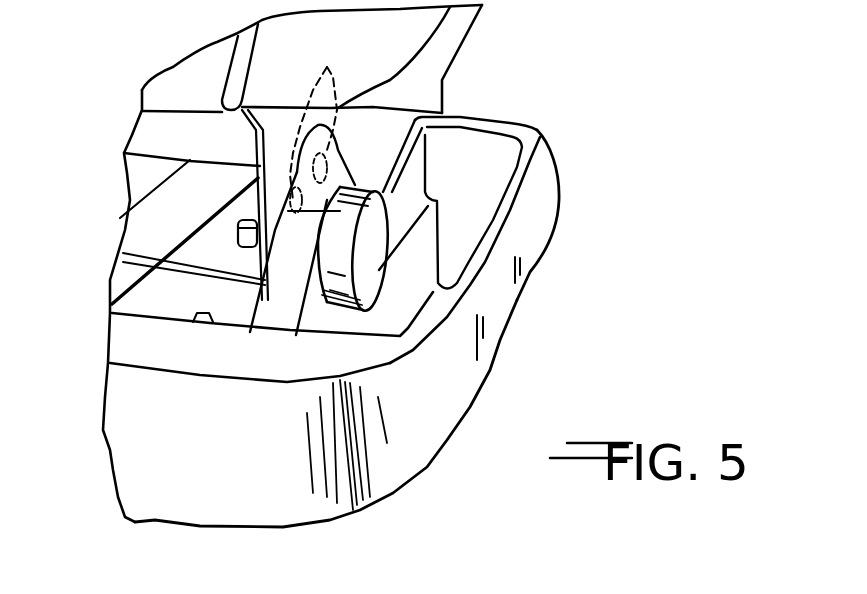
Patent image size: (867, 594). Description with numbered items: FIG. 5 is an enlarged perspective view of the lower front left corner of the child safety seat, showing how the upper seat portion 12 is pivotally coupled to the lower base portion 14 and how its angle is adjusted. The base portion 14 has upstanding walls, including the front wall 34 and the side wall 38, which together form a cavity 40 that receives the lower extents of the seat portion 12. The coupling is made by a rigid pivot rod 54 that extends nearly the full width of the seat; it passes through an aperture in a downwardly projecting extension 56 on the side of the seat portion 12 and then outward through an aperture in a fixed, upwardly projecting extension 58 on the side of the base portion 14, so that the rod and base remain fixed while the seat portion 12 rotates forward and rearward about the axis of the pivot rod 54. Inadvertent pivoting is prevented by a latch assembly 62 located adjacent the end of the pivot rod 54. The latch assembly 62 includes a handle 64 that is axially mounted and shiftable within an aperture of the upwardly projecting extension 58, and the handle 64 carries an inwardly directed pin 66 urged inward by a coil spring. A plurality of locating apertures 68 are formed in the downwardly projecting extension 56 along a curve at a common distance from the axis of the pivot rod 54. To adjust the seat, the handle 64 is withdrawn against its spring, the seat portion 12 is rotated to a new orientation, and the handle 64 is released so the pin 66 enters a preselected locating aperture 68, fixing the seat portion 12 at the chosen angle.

The seat portion 12 is at (420, 28).
The base portion 14 is at (477, 330).
The front wall 34 is at (193, 483).
The side wall 38 is at (520, 247).
The cavity 40 is at (487, 182).
The pivot rod 54 is at (122, 268).
The downwardly projecting extension 56 is at (430, 103).
The upwardly projecting extension 58 is at (283, 290).
The latch assembly 62 is at (403, 201).
The handle 64 is at (333, 297).
The pin 66 is at (237, 223).
The locating apertures 68 is at (335, 77).